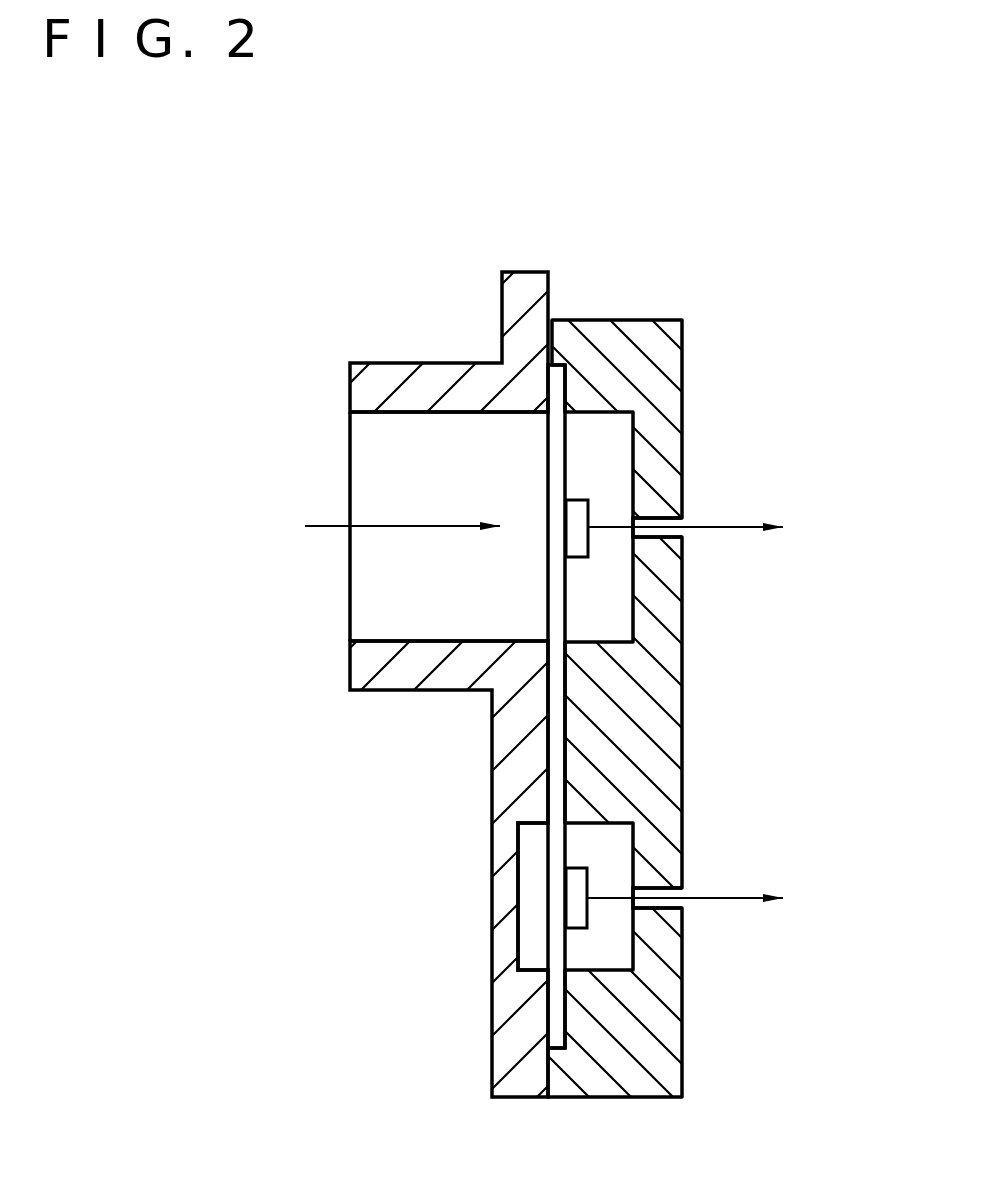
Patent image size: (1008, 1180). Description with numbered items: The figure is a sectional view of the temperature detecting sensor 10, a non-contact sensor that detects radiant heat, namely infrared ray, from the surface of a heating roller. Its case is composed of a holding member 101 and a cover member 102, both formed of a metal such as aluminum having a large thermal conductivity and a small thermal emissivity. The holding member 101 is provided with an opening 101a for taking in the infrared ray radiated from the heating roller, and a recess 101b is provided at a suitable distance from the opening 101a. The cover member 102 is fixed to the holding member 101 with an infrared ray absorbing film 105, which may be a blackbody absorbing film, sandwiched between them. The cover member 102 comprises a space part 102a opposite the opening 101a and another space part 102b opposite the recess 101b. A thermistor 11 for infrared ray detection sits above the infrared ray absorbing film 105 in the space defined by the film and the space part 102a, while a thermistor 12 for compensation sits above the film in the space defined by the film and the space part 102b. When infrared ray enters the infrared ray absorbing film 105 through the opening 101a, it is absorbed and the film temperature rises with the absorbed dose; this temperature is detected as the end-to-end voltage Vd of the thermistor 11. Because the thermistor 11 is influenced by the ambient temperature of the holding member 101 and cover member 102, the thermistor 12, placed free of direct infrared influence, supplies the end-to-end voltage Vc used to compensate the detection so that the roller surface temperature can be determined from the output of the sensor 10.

The temperature detecting sensor 10 is at (352, 317).
The holding member 101 is at (402, 690).
The opening 101a is at (383, 638).
The recess 101b is at (530, 828).
The cover member 102 is at (683, 742).
The space part 102a is at (628, 632).
The space part 102b is at (600, 827).
The infrared ray absorbing film 105 is at (568, 453).
The thermistor for infrared ray detection 11 is at (587, 500).
The thermistor for compensation 12 is at (587, 917).